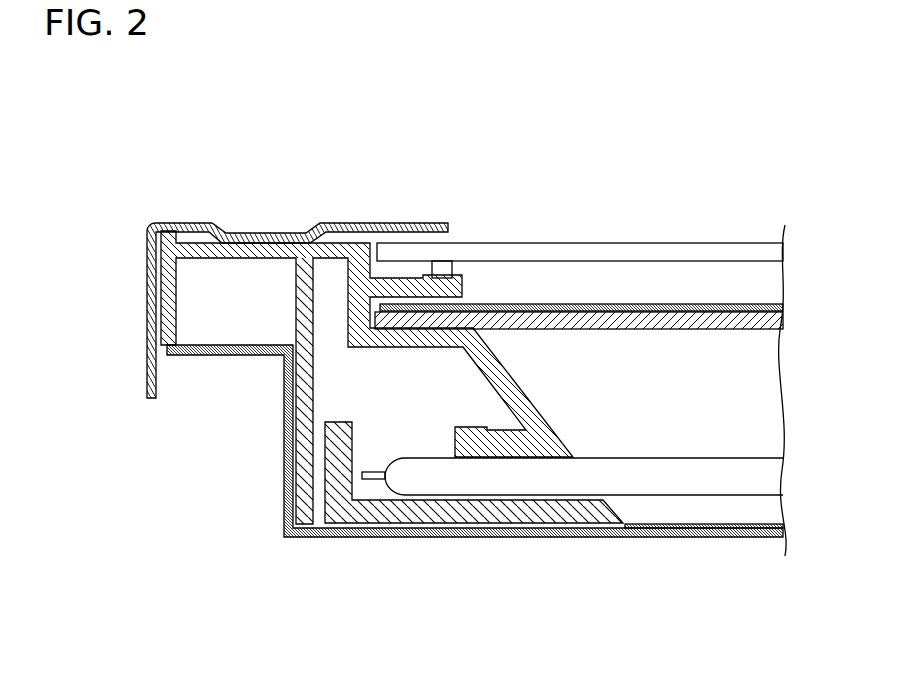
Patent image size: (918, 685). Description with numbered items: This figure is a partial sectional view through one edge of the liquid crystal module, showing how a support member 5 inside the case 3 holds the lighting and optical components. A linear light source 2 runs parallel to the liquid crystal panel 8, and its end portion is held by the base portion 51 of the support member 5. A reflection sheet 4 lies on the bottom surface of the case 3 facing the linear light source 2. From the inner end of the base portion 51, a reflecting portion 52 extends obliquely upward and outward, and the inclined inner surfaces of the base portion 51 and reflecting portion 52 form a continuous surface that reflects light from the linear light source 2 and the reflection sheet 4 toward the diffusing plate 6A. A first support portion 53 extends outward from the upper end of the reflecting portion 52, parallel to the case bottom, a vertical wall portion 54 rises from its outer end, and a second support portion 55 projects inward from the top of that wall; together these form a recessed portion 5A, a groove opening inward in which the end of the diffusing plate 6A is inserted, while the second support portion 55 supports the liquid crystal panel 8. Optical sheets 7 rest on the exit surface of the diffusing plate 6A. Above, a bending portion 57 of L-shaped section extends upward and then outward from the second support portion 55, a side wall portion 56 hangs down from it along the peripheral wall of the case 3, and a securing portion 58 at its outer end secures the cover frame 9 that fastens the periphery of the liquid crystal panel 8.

The linear light source 2 is at (662, 477).
The case 3 is at (283, 487).
The reflection sheet 4 is at (720, 522).
The support member 5 is at (339, 375).
The recessed portion 5A is at (476, 287).
The diffusing plate 6A is at (695, 305).
The optical sheet 7 is at (753, 318).
The liquid crystal panel 8 is at (622, 258).
The cover frame 9 is at (174, 224).
The base portion 51 is at (516, 537).
The reflecting portion 52 is at (492, 358).
The first support portion 53 is at (422, 340).
The vertical wall portion 54 is at (355, 316).
The second support portion 55 is at (396, 280).
The side wall portion 56 is at (307, 363).
The bending portion 57 is at (326, 243).
The securing portion 58 is at (242, 244).